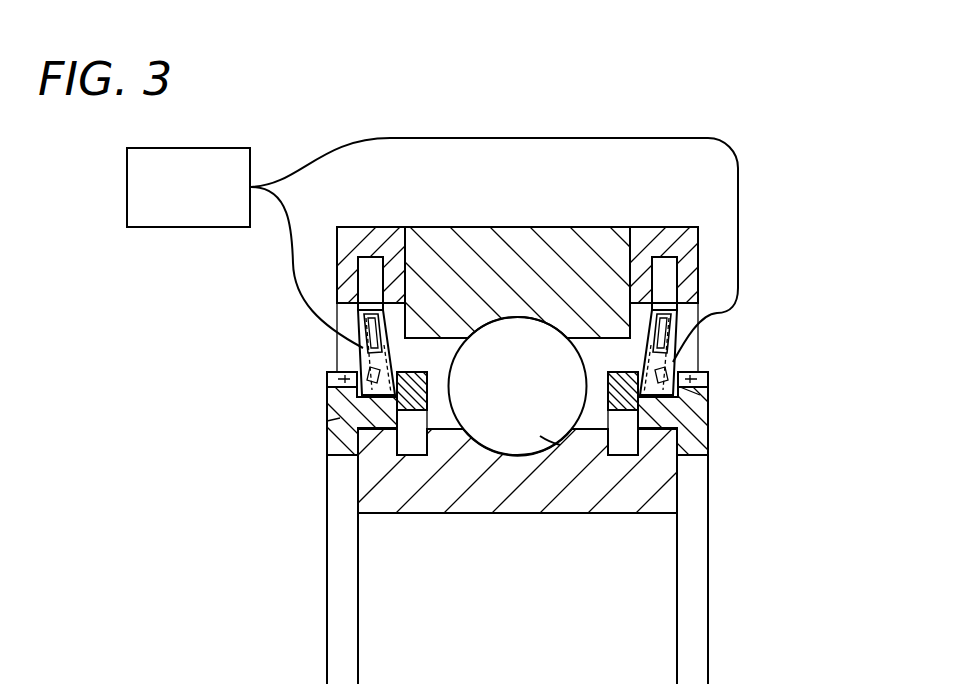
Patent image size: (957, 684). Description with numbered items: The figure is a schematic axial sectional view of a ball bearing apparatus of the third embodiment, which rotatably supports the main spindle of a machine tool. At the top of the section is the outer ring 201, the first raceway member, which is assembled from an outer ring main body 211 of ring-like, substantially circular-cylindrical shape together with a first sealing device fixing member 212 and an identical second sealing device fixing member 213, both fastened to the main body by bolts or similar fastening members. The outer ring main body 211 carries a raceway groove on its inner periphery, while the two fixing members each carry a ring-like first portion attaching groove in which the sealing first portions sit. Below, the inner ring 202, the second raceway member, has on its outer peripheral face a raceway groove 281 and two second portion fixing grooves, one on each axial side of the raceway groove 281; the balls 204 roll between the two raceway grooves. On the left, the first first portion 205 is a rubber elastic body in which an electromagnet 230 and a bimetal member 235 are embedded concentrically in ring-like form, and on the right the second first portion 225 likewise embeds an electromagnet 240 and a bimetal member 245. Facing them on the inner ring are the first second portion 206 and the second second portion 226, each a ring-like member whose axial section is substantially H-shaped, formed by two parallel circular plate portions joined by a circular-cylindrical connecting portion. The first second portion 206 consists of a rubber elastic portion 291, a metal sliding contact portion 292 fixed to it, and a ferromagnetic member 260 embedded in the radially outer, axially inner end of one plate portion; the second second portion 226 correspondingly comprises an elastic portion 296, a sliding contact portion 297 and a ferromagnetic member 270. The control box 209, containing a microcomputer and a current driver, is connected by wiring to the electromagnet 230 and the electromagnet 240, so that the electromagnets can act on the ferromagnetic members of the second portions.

The outer ring 201 is at (490, 263).
The inner ring 202 is at (532, 480).
The balls 204 is at (493, 422).
The first first portion 205 is at (358, 311).
The first second portion 206 is at (340, 444).
The control box 209 is at (174, 228).
The outer ring main body 211 is at (593, 255).
The first sealing device fixing member 212 is at (378, 237).
The second sealing device fixing member 213 is at (668, 247).
The second first portion 225 is at (717, 313).
The second second portion 226 is at (710, 428).
The electromagnet 230 is at (353, 372).
The bimetal member 235 is at (372, 340).
The electromagnet 240 is at (708, 373).
The bimetal member 245 is at (674, 362).
The ferromagnetic member 260 is at (340, 418).
The ferromagnetic member 270 is at (695, 390).
The raceway groove 281 is at (547, 437).
The elastic portion 291 is at (332, 468).
The sliding contact portion 292 is at (432, 395).
The elastic portion 296 is at (693, 458).
The sliding contact portion 297 is at (623, 433).